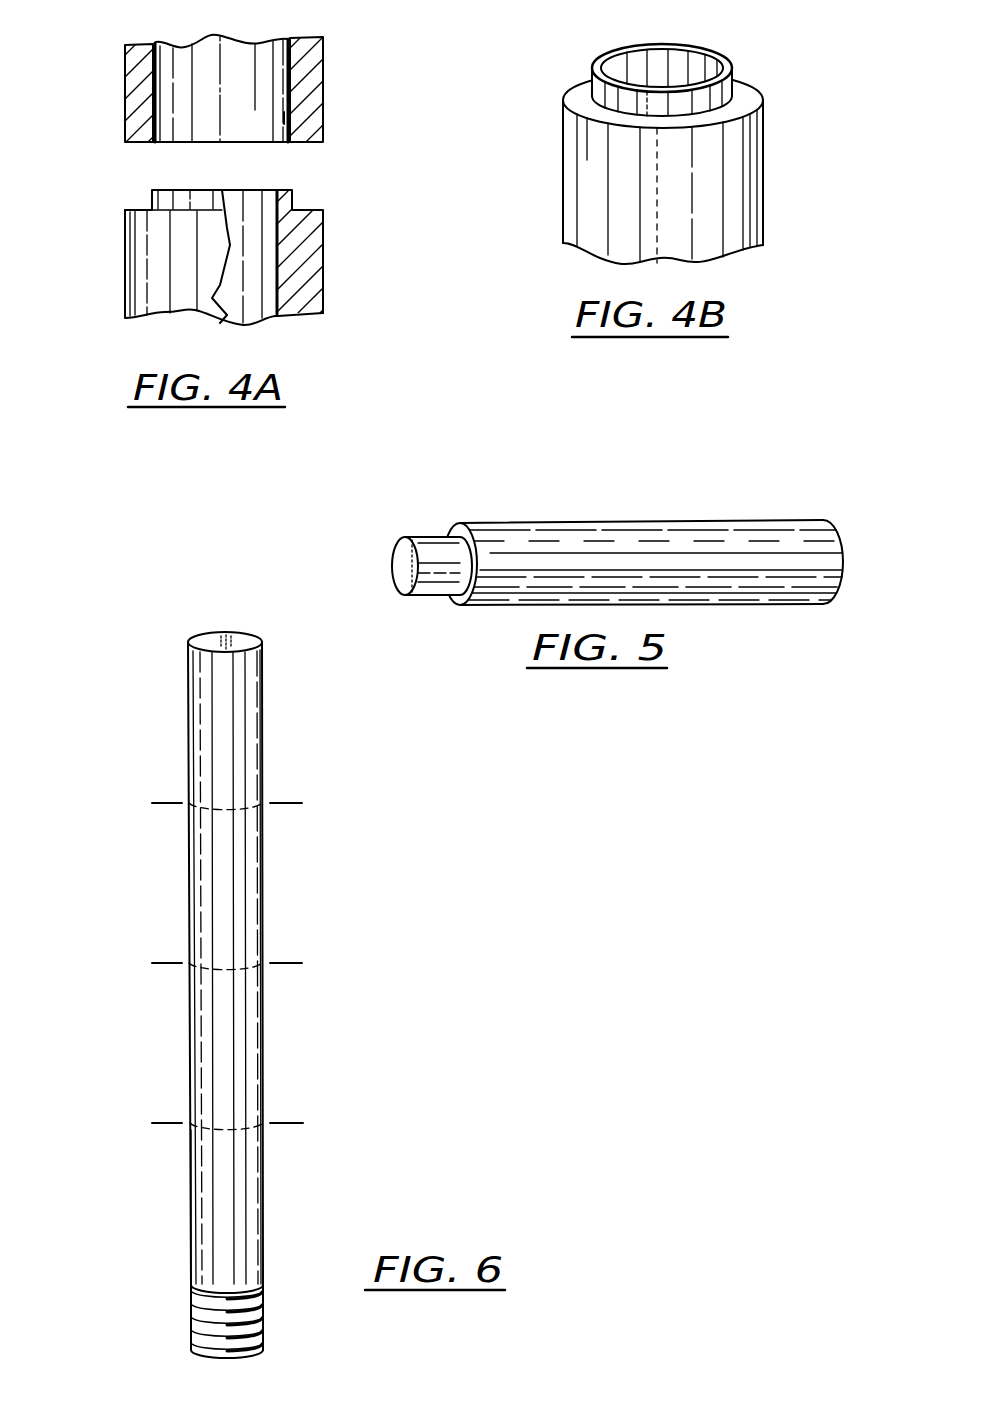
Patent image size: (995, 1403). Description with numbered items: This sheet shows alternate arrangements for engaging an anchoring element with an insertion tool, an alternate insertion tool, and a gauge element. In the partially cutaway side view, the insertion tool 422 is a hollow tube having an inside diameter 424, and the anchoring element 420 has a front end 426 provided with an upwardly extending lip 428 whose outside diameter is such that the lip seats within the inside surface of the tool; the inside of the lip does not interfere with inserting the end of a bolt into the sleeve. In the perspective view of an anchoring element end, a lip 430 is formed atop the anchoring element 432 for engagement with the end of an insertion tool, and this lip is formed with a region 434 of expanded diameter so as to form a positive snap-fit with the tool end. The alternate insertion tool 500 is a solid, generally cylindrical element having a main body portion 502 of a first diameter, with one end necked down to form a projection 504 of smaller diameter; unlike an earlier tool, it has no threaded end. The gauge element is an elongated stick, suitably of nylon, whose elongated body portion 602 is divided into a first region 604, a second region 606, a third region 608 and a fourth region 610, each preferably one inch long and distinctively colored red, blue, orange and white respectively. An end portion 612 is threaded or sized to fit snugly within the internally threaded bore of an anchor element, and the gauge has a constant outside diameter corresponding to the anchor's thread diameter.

In FIG. 4A, the anchoring element 420 is at (125, 296).
In FIG. 4A, the insertion tool 422 is at (124, 112).
In FIG. 4A, the inside diameter 424 is at (282, 118).
In FIG. 4A, the front end 426 is at (139, 209).
In FIG. 4A, the lip 428 is at (297, 197).
In FIG. 4B, the lip 430 is at (633, 104).
In FIG. 4B, the anchoring element 432 is at (760, 186).
In FIG. 4B, the region of expanded diameter 434 is at (713, 52).
In FIG. 5, the insertion tool 500 is at (593, 543).
In FIG. 5, the main body portion 502 is at (743, 590).
In FIG. 5, the projection 504 is at (430, 543).
In FIG. 6, the elongated body portion 602 is at (204, 640).
In FIG. 6, the first region 604 is at (253, 745).
In FIG. 6, the second region 606 is at (254, 905).
In FIG. 6, the third region 608 is at (252, 1060).
In FIG. 6, the fourth region 610 is at (255, 1217).
In FIG. 6, the end portion 612 is at (192, 1330).